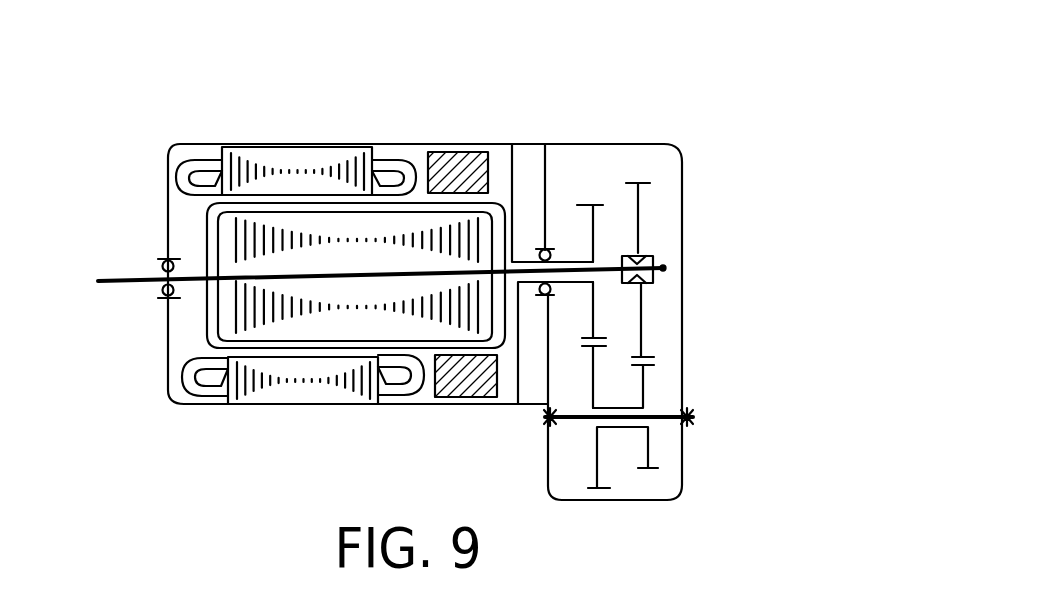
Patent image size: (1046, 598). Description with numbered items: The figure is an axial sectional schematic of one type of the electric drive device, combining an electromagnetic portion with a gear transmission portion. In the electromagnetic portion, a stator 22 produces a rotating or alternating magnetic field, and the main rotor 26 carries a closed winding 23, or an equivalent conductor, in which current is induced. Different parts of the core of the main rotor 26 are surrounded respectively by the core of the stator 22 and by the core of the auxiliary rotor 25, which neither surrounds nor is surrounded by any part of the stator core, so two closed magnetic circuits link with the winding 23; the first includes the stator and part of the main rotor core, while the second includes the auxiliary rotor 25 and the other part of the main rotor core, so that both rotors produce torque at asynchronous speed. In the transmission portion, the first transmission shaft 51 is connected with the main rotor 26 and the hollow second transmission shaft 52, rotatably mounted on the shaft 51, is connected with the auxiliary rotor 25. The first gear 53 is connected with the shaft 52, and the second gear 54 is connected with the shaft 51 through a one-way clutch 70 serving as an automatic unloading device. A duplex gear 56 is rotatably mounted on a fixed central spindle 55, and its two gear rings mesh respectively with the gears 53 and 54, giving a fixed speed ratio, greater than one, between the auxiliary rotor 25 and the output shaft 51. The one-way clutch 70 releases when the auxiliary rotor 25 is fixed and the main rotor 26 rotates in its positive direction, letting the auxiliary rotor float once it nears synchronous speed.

The stator 22 is at (333, 150).
The main rotor winding 23 is at (298, 210).
The auxiliary rotor 25 is at (460, 165).
The main rotor 26 is at (272, 230).
The first transmission shaft 51 is at (128, 277).
The second transmission shaft 52 is at (567, 262).
The first gear 53 is at (592, 203).
The second gear 54 is at (638, 183).
The fixed central spindle 55 is at (687, 415).
The duplex gear 56 is at (650, 381).
The one-way clutch 70 is at (652, 257).